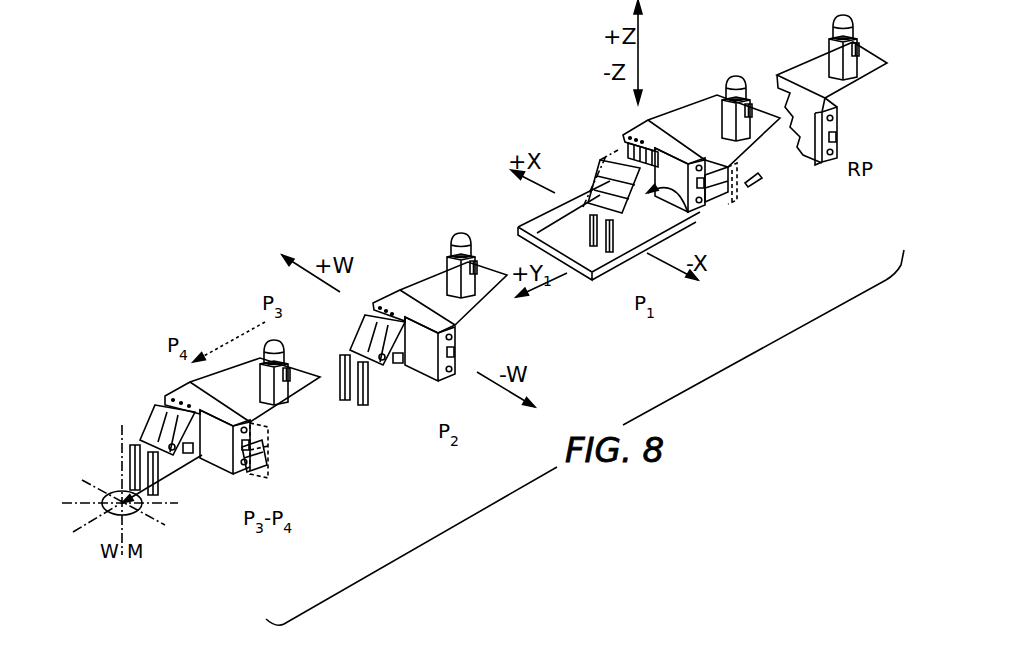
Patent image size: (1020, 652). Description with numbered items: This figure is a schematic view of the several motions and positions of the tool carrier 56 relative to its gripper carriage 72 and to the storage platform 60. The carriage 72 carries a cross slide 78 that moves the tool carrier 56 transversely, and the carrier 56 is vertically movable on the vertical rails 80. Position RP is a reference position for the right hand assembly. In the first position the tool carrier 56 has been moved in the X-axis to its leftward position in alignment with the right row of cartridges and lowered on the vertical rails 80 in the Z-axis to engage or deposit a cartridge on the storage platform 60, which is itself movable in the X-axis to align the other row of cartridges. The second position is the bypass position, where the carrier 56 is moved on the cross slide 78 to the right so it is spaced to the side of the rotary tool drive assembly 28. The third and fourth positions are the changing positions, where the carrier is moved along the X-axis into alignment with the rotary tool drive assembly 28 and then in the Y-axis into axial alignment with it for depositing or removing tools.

The rotary tool drive assembly 28 is at (128, 514).
The tool carrier 56 is at (435, 315).
The storage platform 60 is at (604, 274).
The gripper carriage 72 is at (862, 98).
The cross slide 78 is at (660, 130).
The vertical rails 80 is at (623, 143).